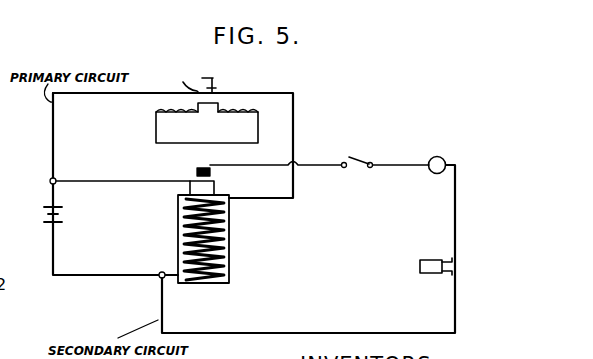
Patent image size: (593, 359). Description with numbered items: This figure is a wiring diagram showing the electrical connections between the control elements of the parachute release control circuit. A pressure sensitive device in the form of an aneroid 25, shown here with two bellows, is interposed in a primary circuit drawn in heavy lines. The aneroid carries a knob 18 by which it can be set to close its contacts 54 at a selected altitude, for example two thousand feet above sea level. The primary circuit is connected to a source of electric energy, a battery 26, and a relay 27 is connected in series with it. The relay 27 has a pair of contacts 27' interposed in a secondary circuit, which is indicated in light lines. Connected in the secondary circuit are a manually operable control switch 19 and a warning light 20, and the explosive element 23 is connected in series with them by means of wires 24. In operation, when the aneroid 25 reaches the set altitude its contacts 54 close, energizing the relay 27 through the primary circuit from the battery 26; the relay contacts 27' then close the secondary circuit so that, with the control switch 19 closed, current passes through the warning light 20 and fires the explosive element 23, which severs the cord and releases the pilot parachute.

The knob 18 is at (216, 78).
The contacts 54 is at (185, 78).
The aneroid 25 is at (156, 133).
The pair of contacts 27' is at (187, 167).
The relay 27 is at (224, 232).
The battery 26 is at (64, 223).
The manually operable control switch 19 is at (372, 160).
The warning light 20 is at (443, 158).
The explosive element 23 is at (421, 262).
The wires 24 is at (452, 262).